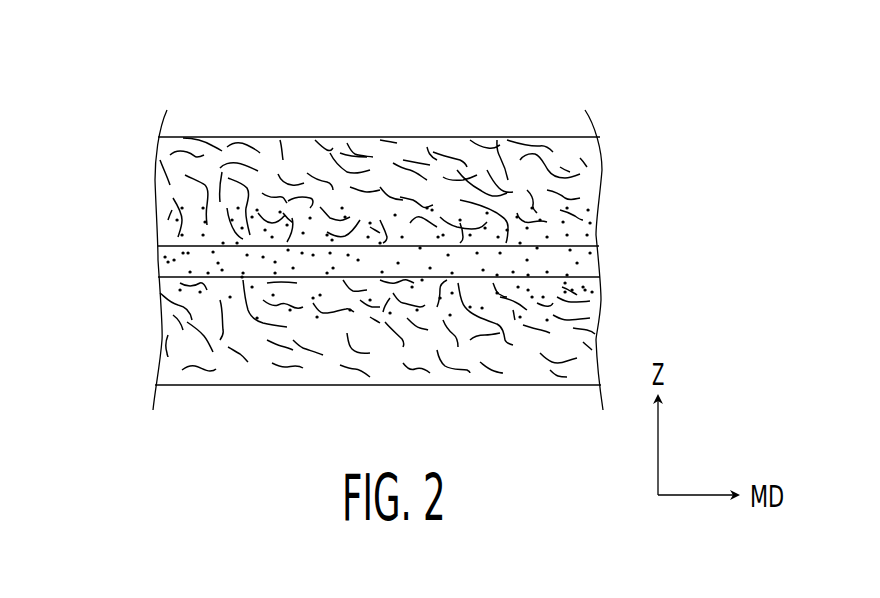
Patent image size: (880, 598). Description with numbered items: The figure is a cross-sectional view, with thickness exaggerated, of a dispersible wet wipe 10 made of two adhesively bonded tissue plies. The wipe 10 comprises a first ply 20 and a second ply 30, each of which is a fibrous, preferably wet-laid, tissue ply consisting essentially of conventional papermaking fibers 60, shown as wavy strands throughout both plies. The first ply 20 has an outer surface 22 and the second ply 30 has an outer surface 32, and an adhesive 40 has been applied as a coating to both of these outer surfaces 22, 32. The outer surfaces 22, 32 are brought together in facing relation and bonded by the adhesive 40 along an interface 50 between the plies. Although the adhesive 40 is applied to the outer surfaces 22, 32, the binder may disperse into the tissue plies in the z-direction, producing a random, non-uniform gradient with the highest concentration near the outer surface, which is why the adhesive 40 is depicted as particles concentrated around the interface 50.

The dispersible wet wipe 10 is at (120, 86).
The first ply 20 is at (315, 140).
The outer surface of the first ply 22 is at (160, 258).
The second ply 30 is at (250, 360).
The outer surface of the second ply 32 is at (603, 257).
The adhesive 40 is at (595, 228).
The interface 50 is at (171, 263).
The papermaking fibers 60 is at (578, 153).